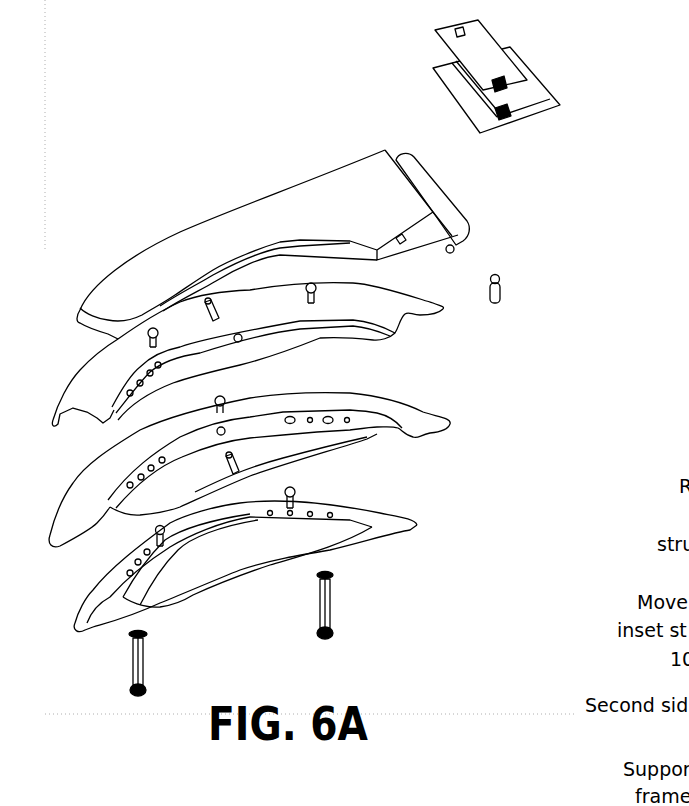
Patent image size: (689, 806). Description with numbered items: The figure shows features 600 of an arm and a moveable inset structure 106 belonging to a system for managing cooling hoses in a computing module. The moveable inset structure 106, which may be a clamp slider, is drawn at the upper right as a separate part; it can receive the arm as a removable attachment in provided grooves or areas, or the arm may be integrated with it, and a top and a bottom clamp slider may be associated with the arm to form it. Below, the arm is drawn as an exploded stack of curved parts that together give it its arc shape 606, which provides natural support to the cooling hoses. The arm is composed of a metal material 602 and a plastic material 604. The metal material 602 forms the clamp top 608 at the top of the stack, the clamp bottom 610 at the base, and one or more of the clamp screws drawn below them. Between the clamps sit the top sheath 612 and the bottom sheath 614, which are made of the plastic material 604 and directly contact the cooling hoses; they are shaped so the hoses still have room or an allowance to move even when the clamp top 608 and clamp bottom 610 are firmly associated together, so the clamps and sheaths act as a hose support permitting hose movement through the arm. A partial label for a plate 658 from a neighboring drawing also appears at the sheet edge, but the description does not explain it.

The features 600 is at (533, 37).
The moveable inset structure 106 is at (433, 70).
The arc shape 606 is at (220, 248).
The clamp top 608 is at (326, 225).
The top sheath 612 is at (410, 308).
The bottom sheath 614 is at (422, 420).
The clamp bottom 610 is at (264, 571).
The metal material 602 is at (518, 292).
The plastic material 604 is at (518, 482).
The plate 658 is at (643, 734).